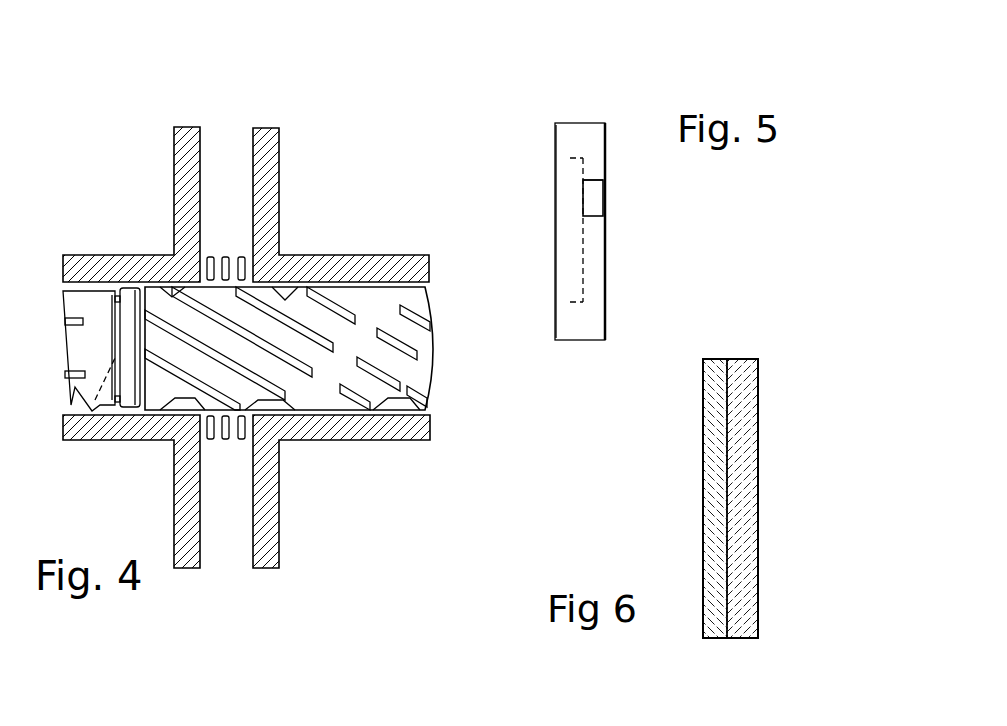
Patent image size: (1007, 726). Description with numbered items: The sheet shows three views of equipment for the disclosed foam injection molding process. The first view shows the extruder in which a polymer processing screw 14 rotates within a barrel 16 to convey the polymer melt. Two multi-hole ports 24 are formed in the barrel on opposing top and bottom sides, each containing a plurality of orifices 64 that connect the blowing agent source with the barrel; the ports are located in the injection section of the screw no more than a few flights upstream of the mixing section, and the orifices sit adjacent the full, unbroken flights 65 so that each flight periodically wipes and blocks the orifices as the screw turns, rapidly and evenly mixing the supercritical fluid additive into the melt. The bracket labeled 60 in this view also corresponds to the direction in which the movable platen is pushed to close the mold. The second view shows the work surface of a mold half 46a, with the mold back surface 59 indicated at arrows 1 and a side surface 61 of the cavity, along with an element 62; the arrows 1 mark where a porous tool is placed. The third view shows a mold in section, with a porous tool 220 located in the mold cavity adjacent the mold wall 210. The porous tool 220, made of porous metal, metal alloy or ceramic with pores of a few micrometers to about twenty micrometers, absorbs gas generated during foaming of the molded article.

In FIG. 4, the polymer processing screw 14 is at (170, 285).
In FIG. 4, the barrel 16 is at (95, 433).
In FIG. 4, the orifices 64 is at (240, 254).
In FIG. 4, the port 24 is at (223, 455).
In FIG. 4, the arrow 60 is at (248, 385).
In FIG. 4, the full, unbroken flights 65 is at (287, 348).
In FIG. 5, the mold half 46a is at (580, 110).
In FIG. 5, the side surface 61 is at (570, 160).
In FIG. 5, the arrows 1 is at (612, 197).
In FIG. 6, the arrows 1 is at (668, 445).
In FIG. 5, the mold back surface 59 is at (581, 227).
In FIG. 5, the carrier 62 is at (606, 292).
In FIG. 6, the mold wall 210 is at (740, 437).
In FIG. 6, the porous tool 220 is at (713, 525).